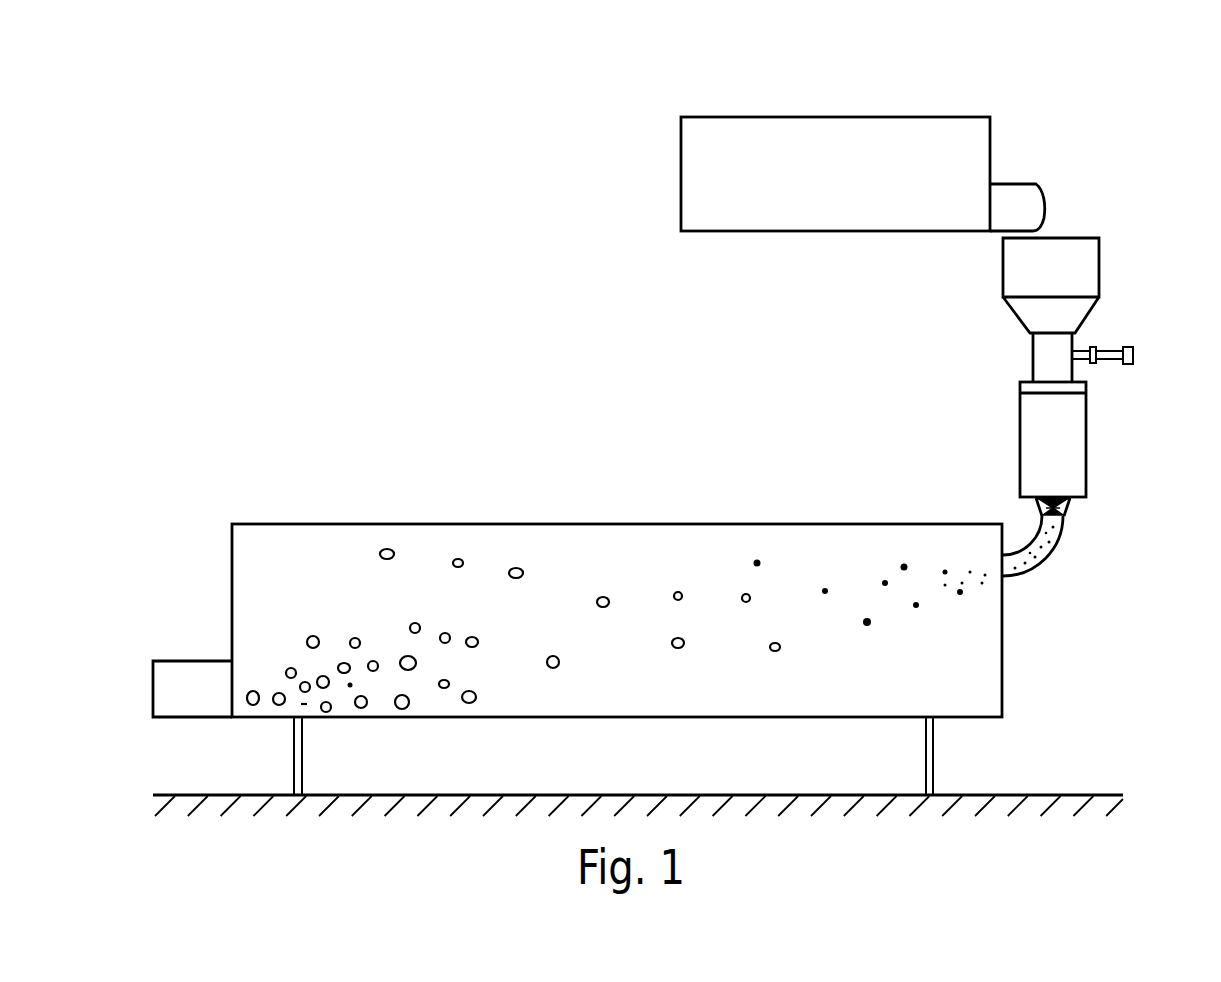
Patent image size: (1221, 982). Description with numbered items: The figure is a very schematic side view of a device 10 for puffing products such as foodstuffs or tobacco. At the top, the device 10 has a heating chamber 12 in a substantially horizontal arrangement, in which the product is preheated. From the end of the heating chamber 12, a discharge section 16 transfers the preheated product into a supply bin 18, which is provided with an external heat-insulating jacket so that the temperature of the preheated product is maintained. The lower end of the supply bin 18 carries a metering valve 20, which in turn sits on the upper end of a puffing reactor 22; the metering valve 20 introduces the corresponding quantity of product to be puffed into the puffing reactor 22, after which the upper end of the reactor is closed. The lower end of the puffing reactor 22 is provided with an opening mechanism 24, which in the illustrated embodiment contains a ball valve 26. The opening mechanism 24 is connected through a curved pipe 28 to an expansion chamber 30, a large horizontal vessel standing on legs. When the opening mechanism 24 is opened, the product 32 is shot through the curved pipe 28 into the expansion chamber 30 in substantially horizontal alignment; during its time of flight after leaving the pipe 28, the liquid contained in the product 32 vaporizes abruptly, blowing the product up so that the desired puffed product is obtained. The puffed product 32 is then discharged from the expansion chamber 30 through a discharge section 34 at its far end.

The puffing device 10 is at (1107, 98).
The heating chamber 12 is at (784, 145).
The discharge section 16 is at (1028, 204).
The supply bin 18 is at (1080, 275).
The metering valve 20 is at (1045, 353).
The puffing reactor 22 is at (1068, 445).
The opening mechanism 24 is at (1072, 505).
The ball valve 26 is at (1037, 505).
The curved pipe 28 is at (1038, 557).
The expansion chamber 30 is at (978, 685).
The product 32 is at (850, 555).
The discharge section 34 is at (183, 678).